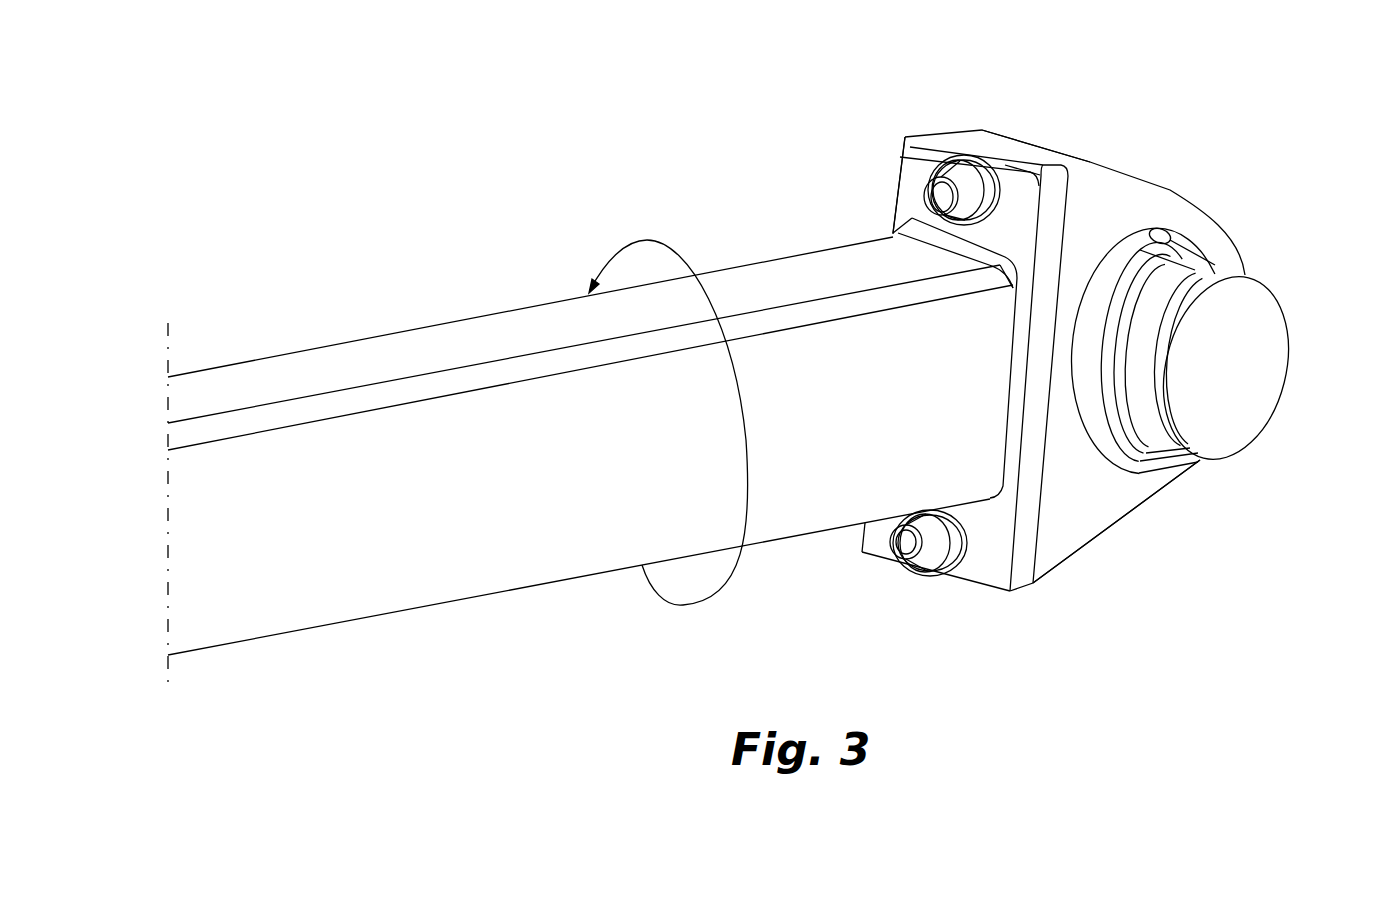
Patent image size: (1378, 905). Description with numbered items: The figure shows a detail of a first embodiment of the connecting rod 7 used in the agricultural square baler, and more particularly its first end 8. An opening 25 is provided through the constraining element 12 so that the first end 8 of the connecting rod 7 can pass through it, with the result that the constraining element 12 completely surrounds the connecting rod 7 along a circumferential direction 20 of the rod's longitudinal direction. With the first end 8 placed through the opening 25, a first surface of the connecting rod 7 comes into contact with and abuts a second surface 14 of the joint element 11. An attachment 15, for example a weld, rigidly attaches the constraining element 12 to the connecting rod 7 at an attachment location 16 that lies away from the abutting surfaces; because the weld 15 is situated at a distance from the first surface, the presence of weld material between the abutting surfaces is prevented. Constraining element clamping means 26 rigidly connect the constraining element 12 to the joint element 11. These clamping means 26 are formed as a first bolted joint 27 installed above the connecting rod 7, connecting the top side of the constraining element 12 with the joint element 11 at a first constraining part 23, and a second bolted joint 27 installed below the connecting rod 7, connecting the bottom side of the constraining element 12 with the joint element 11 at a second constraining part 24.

The connecting rod 7 is at (778, 146).
The first end 8 is at (878, 146).
The joint element 11 is at (1146, 150).
The constraining element 12 is at (1026, 189).
The second surface 14 is at (1045, 248).
The attachment 15 is at (1029, 286).
The attachment location 16 is at (999, 515).
The circumferential direction 20 is at (745, 416).
The first constraining part 23 is at (860, 203).
The second constraining part 24 is at (1092, 550).
The opening 25 is at (1034, 367).
The constraining element clamping means 26 is at (1015, 121).
The bolted joint 27 is at (950, 146).